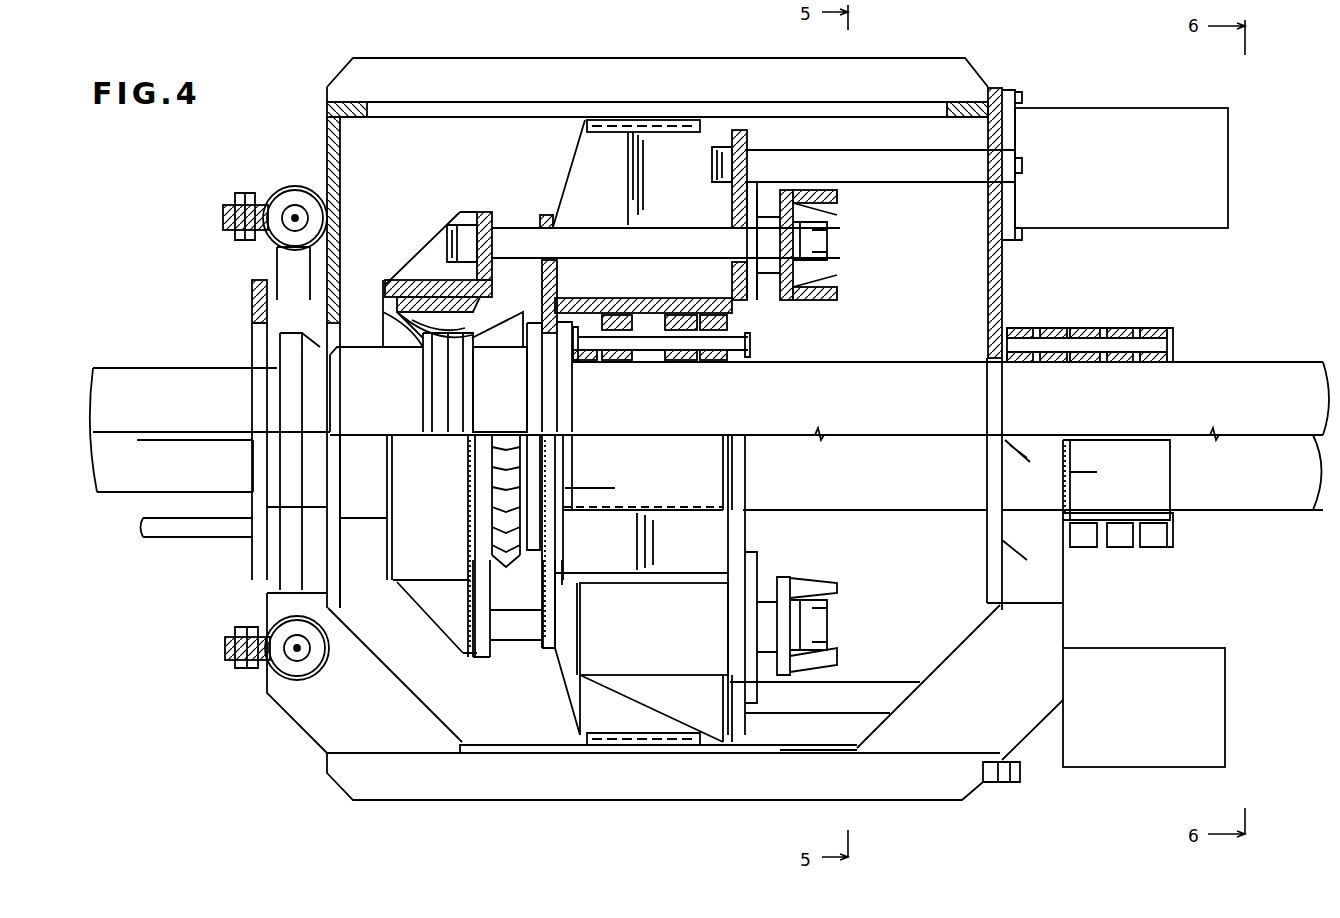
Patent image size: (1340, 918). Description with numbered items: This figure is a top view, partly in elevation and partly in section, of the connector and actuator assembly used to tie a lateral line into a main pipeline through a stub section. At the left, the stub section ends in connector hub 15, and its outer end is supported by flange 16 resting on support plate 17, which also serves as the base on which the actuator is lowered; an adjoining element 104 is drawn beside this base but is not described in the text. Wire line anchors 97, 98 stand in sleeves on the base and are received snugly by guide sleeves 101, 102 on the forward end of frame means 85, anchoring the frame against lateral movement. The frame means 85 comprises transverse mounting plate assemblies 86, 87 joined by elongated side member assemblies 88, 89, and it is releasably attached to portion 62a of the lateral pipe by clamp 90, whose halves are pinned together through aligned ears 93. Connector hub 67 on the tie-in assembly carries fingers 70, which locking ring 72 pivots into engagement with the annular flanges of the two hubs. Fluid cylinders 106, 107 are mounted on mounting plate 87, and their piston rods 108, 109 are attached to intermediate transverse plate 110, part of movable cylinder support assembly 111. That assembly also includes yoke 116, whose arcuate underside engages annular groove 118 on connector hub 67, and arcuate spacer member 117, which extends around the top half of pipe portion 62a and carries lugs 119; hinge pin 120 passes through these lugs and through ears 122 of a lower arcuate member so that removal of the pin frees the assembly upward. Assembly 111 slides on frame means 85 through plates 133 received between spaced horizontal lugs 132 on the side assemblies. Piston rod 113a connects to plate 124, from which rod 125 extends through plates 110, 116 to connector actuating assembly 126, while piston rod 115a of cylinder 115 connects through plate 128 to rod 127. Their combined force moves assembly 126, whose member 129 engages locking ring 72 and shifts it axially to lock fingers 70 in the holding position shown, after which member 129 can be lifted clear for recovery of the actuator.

The connector hub 15 is at (362, 340).
The flange 16 is at (290, 333).
The support plate 17 is at (275, 252).
The portion of pipe 62a is at (1245, 362).
The connector hub 67 is at (512, 410).
The fingers 70 is at (528, 320).
The locking ring 72 is at (405, 297).
The frame means 85 is at (310, 752).
The transverse mounting plate assembly 86 is at (326, 283).
The transverse mounting plate assembly 87 is at (1003, 268).
The side member assembly 88 is at (552, 58).
The side member assembly 89 is at (631, 809).
The clamp 90 is at (1090, 438).
The ears 93 is at (1062, 328).
The wire line anchor 97 is at (280, 662).
The wire line anchor 98 is at (282, 200).
The guide sleeve 101 is at (298, 680).
The guide sleeve 102 is at (298, 188).
The input shaft 104 is at (143, 518).
The fluid cylinder 106 is at (1130, 168).
The fluid cylinder 107 is at (1147, 711).
The piston rod 108 is at (915, 182).
The piston rod 109 is at (880, 682).
The intermediate transverse plate 110 is at (747, 523).
The cylinder support assembly 111 is at (524, 197).
The piston rod 113a is at (768, 272).
The cylinder 115 is at (683, 642).
The piston rod 115a is at (762, 600).
The yoke 116 is at (557, 273).
The spacer member 117 is at (650, 300).
The annular groove 118 is at (548, 367).
The lugs 119 is at (623, 360).
The hinge pin 120 is at (752, 344).
The ears 122 is at (660, 362).
The plate 124 is at (835, 297).
The rod 125 is at (683, 228).
The connector actuating assembly 126 is at (446, 197).
The rod 127 is at (515, 635).
The plate 128 is at (785, 578).
The member 129 is at (443, 496).
The horizontal lugs 132 is at (655, 120).
The plates 133 is at (615, 182).